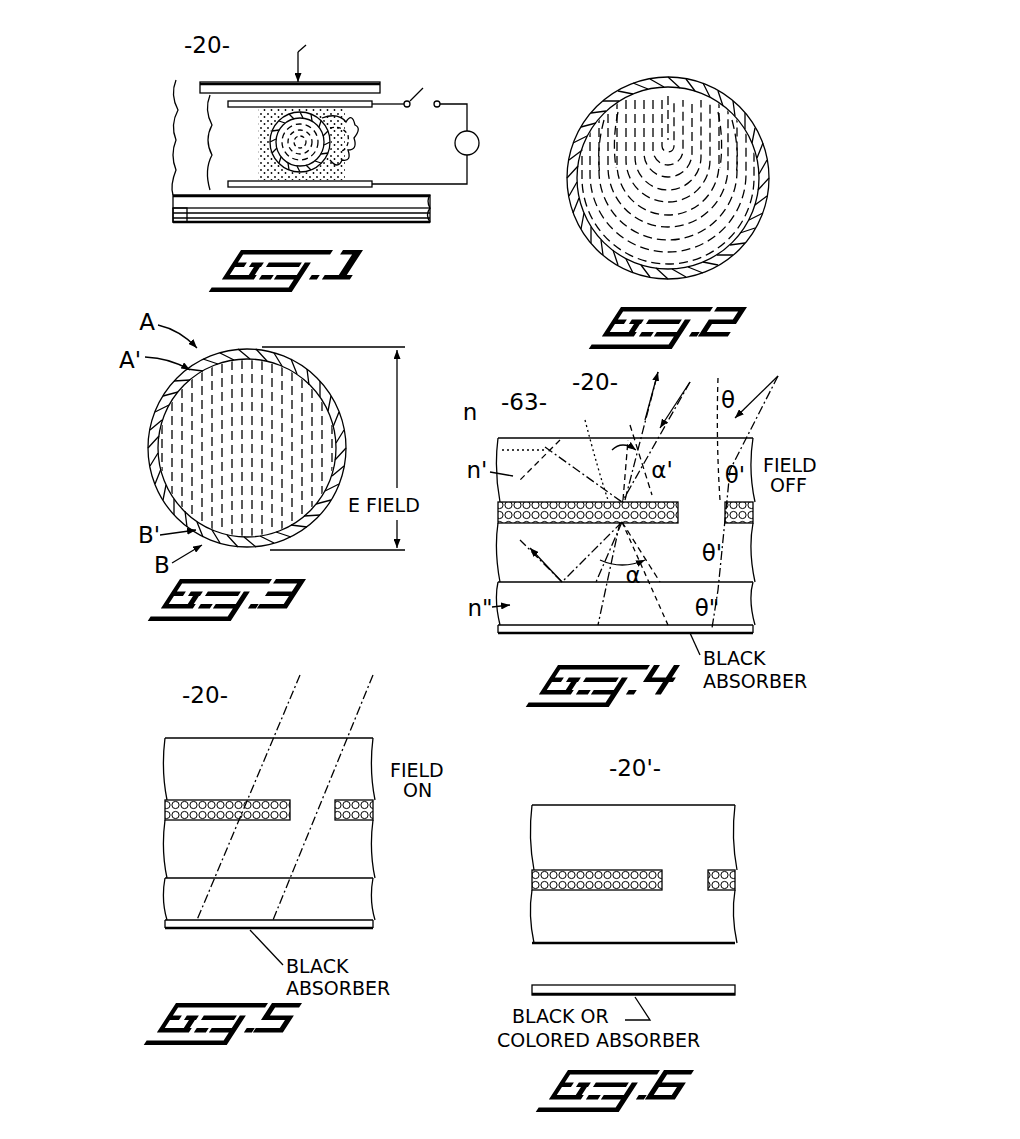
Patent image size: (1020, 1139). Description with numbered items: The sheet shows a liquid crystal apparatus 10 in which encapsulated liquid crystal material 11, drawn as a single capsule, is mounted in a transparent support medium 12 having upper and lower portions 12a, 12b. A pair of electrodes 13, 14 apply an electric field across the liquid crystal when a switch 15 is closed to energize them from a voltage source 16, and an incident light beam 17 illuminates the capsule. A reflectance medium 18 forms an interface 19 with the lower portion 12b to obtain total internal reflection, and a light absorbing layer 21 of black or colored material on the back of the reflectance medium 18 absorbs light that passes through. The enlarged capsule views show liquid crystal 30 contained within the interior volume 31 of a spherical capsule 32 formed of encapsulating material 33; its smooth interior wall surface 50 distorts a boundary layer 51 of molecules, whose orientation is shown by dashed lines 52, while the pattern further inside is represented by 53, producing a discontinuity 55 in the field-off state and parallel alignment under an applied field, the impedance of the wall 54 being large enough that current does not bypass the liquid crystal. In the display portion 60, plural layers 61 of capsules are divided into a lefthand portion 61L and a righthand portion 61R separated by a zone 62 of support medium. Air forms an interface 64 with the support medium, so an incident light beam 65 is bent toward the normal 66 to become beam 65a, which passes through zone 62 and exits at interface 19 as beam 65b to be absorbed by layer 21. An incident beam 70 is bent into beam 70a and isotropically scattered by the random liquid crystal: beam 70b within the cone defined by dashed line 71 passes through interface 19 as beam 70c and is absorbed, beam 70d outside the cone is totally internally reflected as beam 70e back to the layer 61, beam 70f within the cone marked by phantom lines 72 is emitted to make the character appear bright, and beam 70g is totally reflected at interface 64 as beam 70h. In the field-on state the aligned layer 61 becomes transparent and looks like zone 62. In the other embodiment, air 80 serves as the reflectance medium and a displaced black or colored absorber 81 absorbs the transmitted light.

In FIG. 1, the liquid crystal apparatus 10 is at (160, 107).
In FIG. 1, the encapsulated liquid crystal material 11 is at (272, 134).
In FIG. 2, the encapsulated liquid crystal material 11 is at (600, 97).
In FIG. 3, the encapsulated liquid crystal material 11 is at (145, 455).
In FIG. 4, the encapsulated liquid crystal material 11 is at (498, 540).
In FIG. 6, the encapsulated liquid crystal material 11 is at (557, 870).
In FIG. 1, the support medium 12 is at (170, 160).
In FIG. 4, the support medium 12 is at (750, 443).
In FIG. 6, the support medium 12 is at (722, 832).
In FIG. 1, the upper support medium portion 12a is at (213, 82).
In FIG. 5, the upper support medium portion 12a is at (363, 748).
In FIG. 1, the lower support medium portion 12b is at (200, 200).
In FIG. 5, the lower support medium portion 12b is at (373, 856).
In FIG. 1, the electrode 13 is at (245, 180).
In FIG. 4, the electrode 13 is at (500, 548).
In FIG. 1, the electrode 14 is at (246, 101).
In FIG. 4, the electrode 14 is at (528, 508).
In FIG. 1, the switch 15 is at (426, 86).
In FIG. 1, the voltage source 16 is at (479, 140).
In FIG. 1, the light beam 17 is at (315, 58).
In FIG. 1, the reflectance medium 18 is at (172, 215).
In FIG. 4, the reflectance medium 18 is at (755, 606).
In FIG. 5, the reflectance medium 18 is at (365, 902).
In FIG. 1, the interface 19 is at (185, 224).
In FIG. 4, the interface 19 is at (755, 590).
In FIG. 5, the interface 19 is at (365, 880).
In FIG. 6, the interface 19 is at (720, 945).
In FIG. 1, the light absorbing layer 21 is at (222, 225).
In FIG. 4, the light absorbing layer 21 is at (755, 630).
In FIG. 5, the light absorbing layer 21 is at (373, 926).
In FIG. 1, the liquid crystal 30 is at (318, 123).
In FIG. 2, the liquid crystal 30 is at (720, 245).
In FIG. 3, the liquid crystal 30 is at (195, 490).
In FIG. 1, the interior volume 31 is at (325, 143).
In FIG. 2, the interior volume 31 is at (755, 220).
In FIG. 1, the capsule 32 is at (330, 160).
In FIG. 2, the capsule 32 is at (760, 205).
In FIG. 3, the capsule 32 is at (170, 400).
In FIG. 1, the encapsulating material 33 is at (335, 172).
In FIG. 2, the interior wall surface 50 is at (753, 167).
In FIG. 2, the layer of liquid crystal molecules 51 is at (752, 152).
In FIG. 2, the dashed lines 52 is at (745, 140).
In FIG. 2, the directional pattern 53 is at (730, 130).
In FIG. 2, the wall 54 is at (722, 97).
In FIG. 2, the discontinuity 55 is at (672, 118).
In FIG. 4, the display device portion 60 is at (563, 405).
In FIG. 5, the display device portion 60 is at (188, 722).
In FIG. 6, the display device portion 60 is at (580, 800).
In FIG. 4, the layers of encapsulated liquid crystals 61 is at (490, 502).
In FIG. 5, the layers of encapsulated liquid crystals 61 is at (158, 803).
In FIG. 6, the layers of encapsulated liquid crystals 61 is at (525, 872).
In FIG. 4, the lefthand portion of layers 61L is at (498, 512).
In FIG. 5, the lefthand portion of layers 61L is at (168, 820).
In FIG. 6, the lefthand portion of layers 61L is at (533, 883).
In FIG. 4, the righthand portion of layers 61R is at (753, 512).
In FIG. 5, the righthand portion of layers 61R is at (373, 812).
In FIG. 6, the righthand portion of layers 61R is at (735, 880).
In FIG. 4, the zone of support medium 62 is at (715, 522).
In FIG. 5, the zone of support medium 62 is at (315, 824).
In FIG. 6, the zone of support medium 62 is at (693, 895).
In FIG. 4, the interface 64 is at (547, 438).
In FIG. 5, the interface 64 is at (180, 738).
In FIG. 6, the interface 64 is at (705, 805).
In FIG. 4, the light beam 65 is at (753, 490).
In FIG. 4, the light beam 65a is at (702, 482).
In FIG. 5, the light beam 65a is at (320, 750).
In FIG. 4, the light beam 65b is at (655, 648).
In FIG. 5, the light beam 65b is at (282, 908).
In FIG. 4, the normal 66 is at (717, 427).
In FIG. 4, the incident light beam 70 is at (656, 429).
In FIG. 4, the light beam 70a is at (660, 440).
In FIG. 5, the light beam 70a is at (243, 752).
In FIG. 4, the light beam 70b is at (643, 552).
In FIG. 4, the light beam 70c is at (643, 573).
In FIG. 4, the light beam 70d is at (571, 552).
In FIG. 4, the light beam 70e is at (522, 572).
In FIG. 4, the light beam 70f is at (632, 429).
In FIG. 4, the light beam 70g is at (575, 453).
In FIG. 4, the light beam 70h is at (500, 448).
In FIG. 4, the dashed line 71 is at (624, 573).
In FIG. 4, the single dot phantom lines 72 is at (650, 452).
In FIG. 6, the air reflectance medium 80 is at (723, 969).
In FIG. 6, the black or colored absorber 81 is at (725, 988).